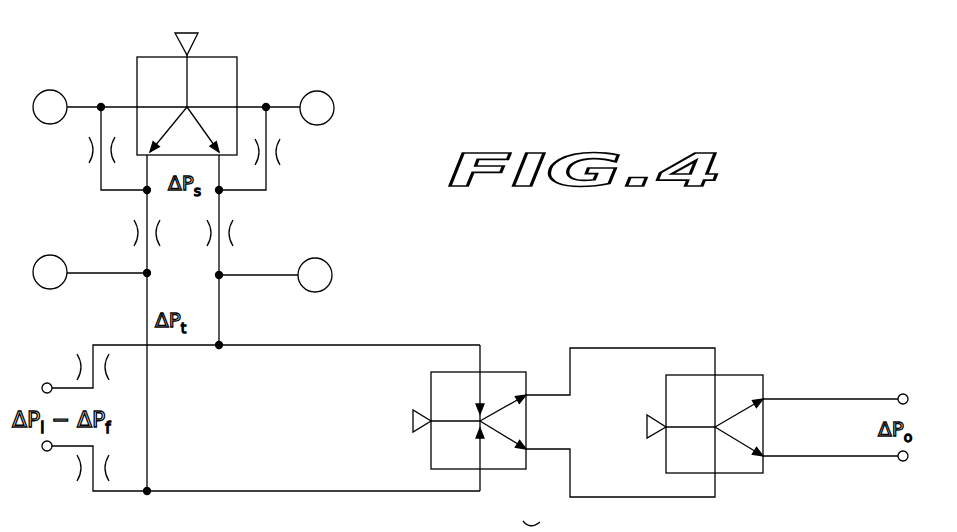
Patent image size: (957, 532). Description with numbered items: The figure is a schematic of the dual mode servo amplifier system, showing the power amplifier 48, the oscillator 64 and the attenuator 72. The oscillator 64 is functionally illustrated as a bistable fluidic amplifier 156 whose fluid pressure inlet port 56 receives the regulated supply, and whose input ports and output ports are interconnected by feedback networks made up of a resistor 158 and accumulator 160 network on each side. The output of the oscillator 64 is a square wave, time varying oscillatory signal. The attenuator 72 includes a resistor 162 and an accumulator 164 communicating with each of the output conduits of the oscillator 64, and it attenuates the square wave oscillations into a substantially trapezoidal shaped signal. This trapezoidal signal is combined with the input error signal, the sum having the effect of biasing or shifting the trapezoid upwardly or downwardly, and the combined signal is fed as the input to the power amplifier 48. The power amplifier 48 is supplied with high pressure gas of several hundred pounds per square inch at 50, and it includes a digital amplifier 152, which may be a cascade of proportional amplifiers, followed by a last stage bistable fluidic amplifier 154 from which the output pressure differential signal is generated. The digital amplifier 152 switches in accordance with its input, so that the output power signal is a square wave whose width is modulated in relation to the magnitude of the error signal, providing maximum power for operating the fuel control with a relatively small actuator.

The power amplifier 48 is at (592, 304).
The high pressure gas supply 50 is at (413, 425).
The fluid pressure inlet port 56 is at (184, 32).
The oscillator 64 is at (340, 71).
The attenuator 72 is at (350, 296).
The digital amplifier 152 is at (431, 392).
The bistable fluidic amplifier 154 is at (666, 398).
The bistable fluidic amplifier 156 is at (222, 57).
The resistor 158 is at (88, 152).
The accumulator 160 is at (56, 89).
The resistor 162 is at (134, 234).
The accumulator 164 is at (62, 288).